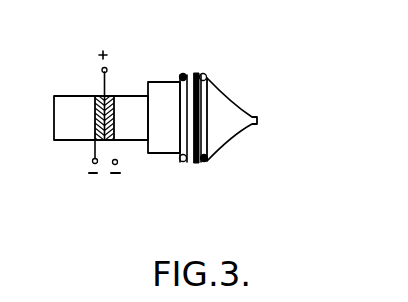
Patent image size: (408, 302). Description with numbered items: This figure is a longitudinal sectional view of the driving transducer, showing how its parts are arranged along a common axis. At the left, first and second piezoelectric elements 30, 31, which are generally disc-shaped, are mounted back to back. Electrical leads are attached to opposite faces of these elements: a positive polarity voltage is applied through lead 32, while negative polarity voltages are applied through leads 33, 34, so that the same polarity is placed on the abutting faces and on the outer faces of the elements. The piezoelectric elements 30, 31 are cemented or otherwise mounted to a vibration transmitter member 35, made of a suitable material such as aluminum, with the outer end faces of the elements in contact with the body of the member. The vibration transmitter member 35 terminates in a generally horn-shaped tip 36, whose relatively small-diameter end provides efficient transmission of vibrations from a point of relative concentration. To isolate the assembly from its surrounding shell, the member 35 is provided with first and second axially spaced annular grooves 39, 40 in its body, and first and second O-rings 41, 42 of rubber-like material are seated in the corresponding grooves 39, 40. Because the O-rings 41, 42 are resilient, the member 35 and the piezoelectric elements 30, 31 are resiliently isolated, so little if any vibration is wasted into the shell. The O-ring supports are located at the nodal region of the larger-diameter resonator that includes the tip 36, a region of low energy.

The first piezoelectric element 30 is at (100, 97).
The second piezoelectric element 31 is at (111, 97).
The electrical lead 32 is at (107, 96).
The electrical lead 33 is at (92, 162).
The electrical lead 34 is at (136, 184).
The vibration transmitter member 35 is at (82, 125).
The horn-shaped tip 36 is at (233, 106).
The first annular groove 39 is at (183, 81).
The second annular groove 40 is at (207, 86).
The first O-ring 41 is at (183, 164).
The second O-ring 42 is at (208, 163).